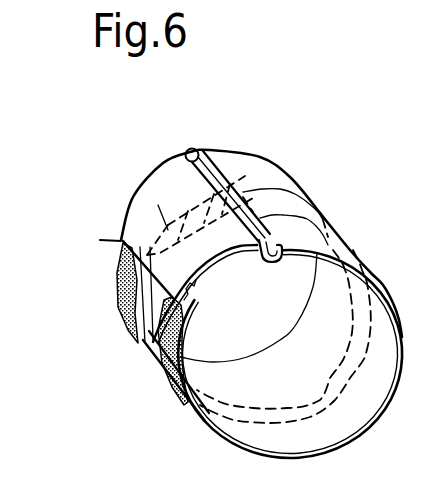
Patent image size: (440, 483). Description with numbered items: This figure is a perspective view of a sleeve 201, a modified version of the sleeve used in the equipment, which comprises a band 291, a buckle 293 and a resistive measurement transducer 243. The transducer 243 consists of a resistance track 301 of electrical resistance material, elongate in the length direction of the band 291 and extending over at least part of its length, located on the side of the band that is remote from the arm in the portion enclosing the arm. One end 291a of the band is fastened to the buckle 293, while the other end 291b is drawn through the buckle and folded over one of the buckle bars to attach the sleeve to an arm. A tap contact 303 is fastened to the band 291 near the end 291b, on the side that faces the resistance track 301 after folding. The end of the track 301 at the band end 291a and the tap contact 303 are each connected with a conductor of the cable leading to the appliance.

The sleeve 201 is at (141, 180).
The resistive measurement transducer 243 is at (174, 198).
The band 291 is at (262, 158).
The one end of the band 291a is at (233, 157).
The other end of the band 291b is at (118, 246).
The buckle 293 is at (201, 150).
The resistance track 301 is at (147, 350).
The tap contact 303 is at (168, 225).